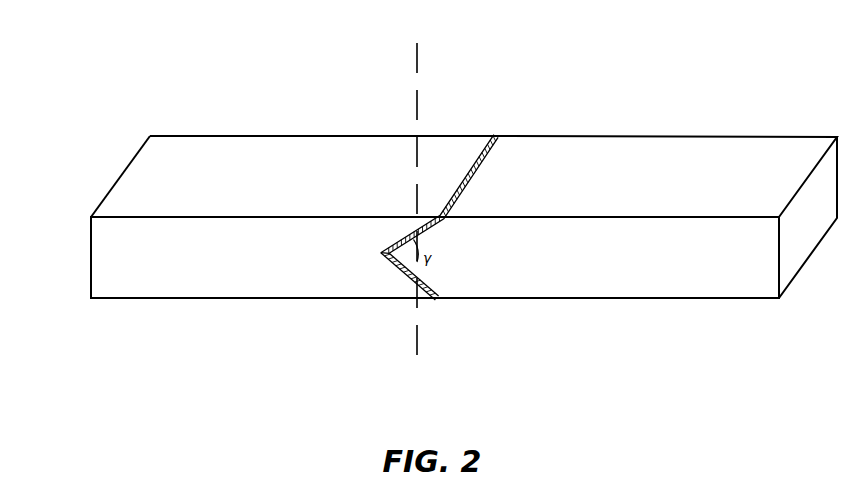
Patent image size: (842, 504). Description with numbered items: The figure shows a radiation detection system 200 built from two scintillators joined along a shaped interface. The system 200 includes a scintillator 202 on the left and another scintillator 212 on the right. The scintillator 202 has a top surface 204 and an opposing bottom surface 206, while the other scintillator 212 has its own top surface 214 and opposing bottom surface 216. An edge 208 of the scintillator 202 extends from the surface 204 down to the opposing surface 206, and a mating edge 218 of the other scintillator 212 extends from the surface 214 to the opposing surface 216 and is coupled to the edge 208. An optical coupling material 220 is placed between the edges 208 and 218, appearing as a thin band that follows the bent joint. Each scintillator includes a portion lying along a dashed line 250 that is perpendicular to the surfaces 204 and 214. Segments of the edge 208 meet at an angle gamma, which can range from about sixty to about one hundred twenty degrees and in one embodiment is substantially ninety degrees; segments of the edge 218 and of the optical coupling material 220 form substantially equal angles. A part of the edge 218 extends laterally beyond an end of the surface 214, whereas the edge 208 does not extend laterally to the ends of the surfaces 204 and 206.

The radiation detection system 200 is at (137, 53).
The scintillator 202 is at (102, 145).
The surface 204 is at (301, 163).
The opposing surface 206 is at (260, 311).
The edge 208 is at (389, 240).
The other scintillator 212 is at (737, 93).
The surface 214 is at (618, 163).
The opposing surface 216 is at (632, 310).
The edge 218 is at (440, 281).
The optical coupling material 220 is at (487, 128).
The line 250 is at (408, 342).